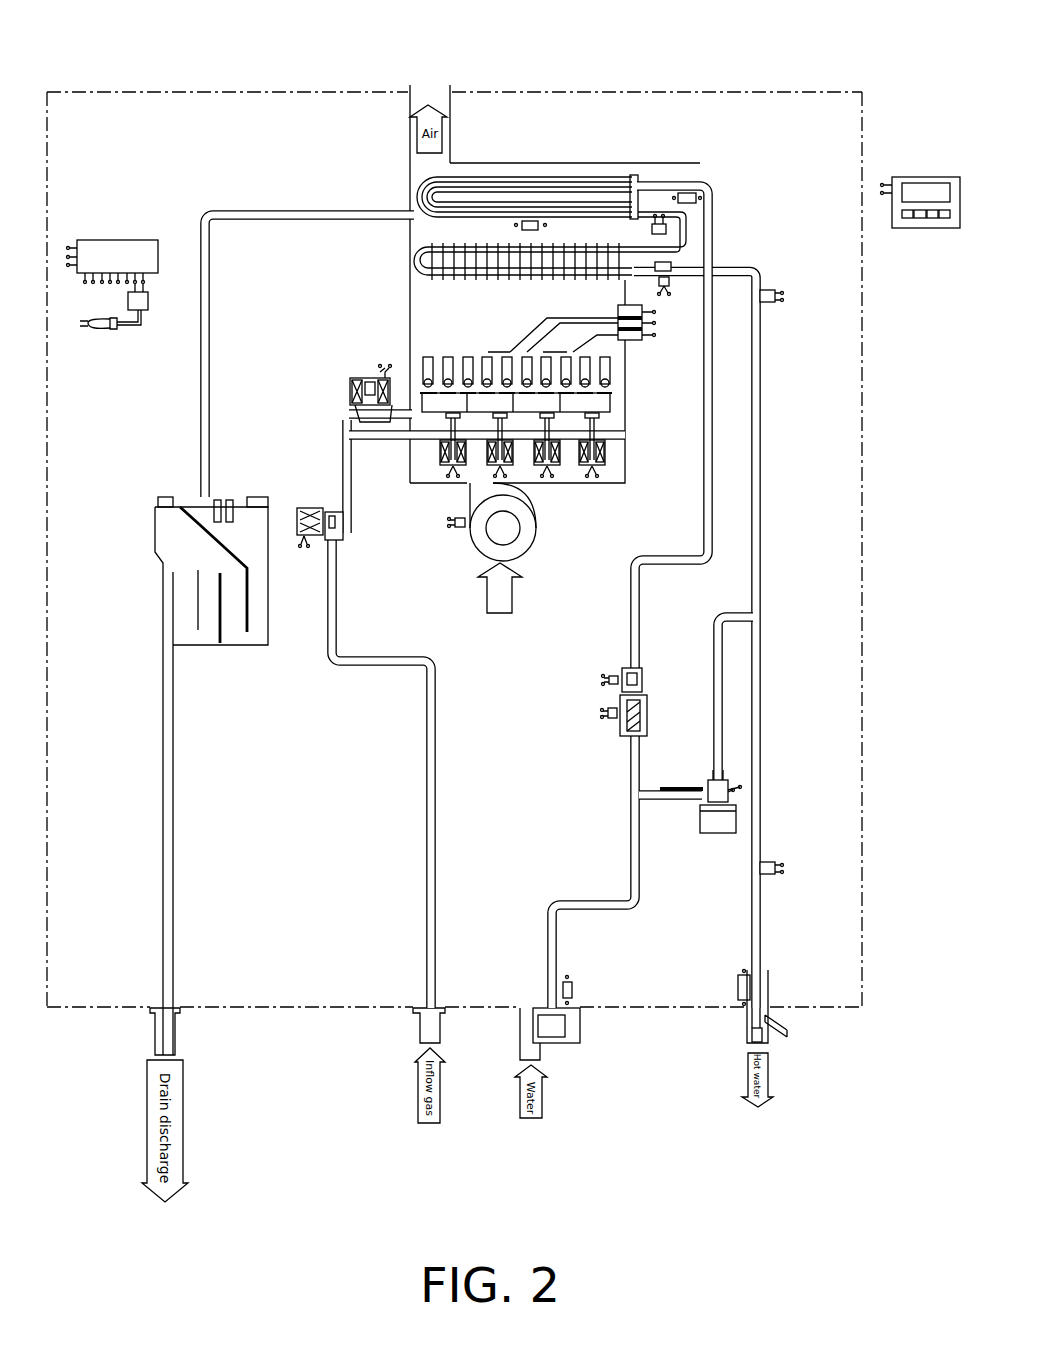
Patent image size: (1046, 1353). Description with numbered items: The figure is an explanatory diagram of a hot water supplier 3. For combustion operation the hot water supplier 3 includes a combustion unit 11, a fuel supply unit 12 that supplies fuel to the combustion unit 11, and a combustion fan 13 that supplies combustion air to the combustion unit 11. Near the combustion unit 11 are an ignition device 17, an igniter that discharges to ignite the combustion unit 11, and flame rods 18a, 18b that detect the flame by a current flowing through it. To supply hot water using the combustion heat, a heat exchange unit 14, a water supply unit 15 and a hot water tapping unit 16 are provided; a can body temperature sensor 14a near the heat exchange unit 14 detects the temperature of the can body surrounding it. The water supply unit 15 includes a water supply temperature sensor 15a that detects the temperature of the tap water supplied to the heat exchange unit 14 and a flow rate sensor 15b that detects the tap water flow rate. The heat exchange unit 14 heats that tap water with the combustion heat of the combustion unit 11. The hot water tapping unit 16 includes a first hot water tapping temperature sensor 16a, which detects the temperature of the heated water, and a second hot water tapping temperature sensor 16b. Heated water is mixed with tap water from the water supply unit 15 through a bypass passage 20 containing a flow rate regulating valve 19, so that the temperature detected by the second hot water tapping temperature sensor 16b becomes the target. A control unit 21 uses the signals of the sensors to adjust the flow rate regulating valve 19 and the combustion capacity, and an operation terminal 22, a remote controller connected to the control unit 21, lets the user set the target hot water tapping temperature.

The hot water supplier 3 is at (122, 85).
The combustion unit 11 is at (618, 358).
The fuel supply unit 12 is at (327, 416).
The combustion fan 13 is at (485, 554).
The heat exchange unit 14 is at (456, 300).
The can body temperature sensor 14a is at (675, 290).
The water supply unit 15 is at (620, 852).
The water supply temperature sensor 15a is at (620, 677).
The flow rate sensor 15b is at (620, 730).
The hot water tapping unit 16 is at (764, 607).
The first hot water tapping temperature sensor 16a is at (775, 303).
The second hot water tapping temperature sensor 16b is at (773, 862).
The ignition device 17 is at (599, 333).
The flame rod 18a is at (563, 330).
The flame rod 18b is at (540, 323).
The flow rate regulating valve 19 is at (712, 835).
The bypass passage 20 is at (712, 688).
The control unit 21 is at (118, 240).
The operation terminal 22 is at (928, 177).